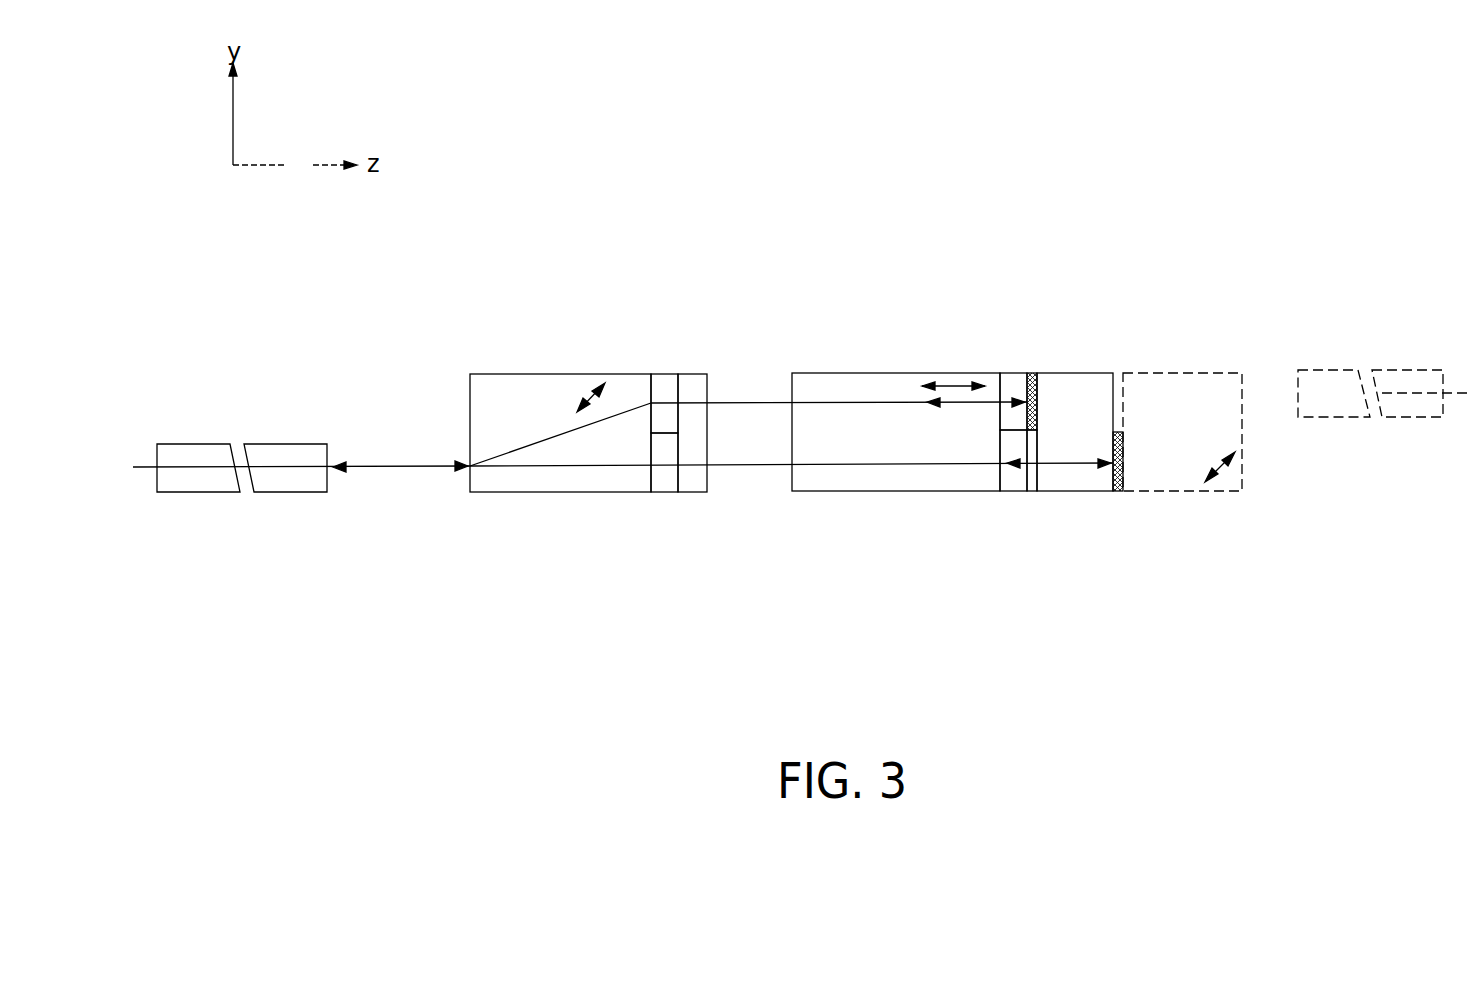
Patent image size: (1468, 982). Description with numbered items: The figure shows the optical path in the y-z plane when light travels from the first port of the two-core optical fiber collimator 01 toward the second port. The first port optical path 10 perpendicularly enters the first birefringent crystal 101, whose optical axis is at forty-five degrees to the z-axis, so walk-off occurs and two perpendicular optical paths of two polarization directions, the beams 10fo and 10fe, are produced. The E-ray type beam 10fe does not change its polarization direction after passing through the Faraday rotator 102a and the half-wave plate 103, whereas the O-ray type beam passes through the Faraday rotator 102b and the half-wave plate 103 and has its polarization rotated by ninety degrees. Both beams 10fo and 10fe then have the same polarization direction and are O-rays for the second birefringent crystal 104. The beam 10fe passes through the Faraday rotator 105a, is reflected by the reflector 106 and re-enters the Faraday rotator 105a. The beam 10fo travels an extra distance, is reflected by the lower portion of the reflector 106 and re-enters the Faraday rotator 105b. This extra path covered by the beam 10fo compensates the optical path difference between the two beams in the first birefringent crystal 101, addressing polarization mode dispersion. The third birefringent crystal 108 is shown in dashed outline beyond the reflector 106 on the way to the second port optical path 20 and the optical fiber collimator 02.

The two-core optical fiber collimator 01 is at (232, 416).
The optical fiber collimator 02 is at (1370, 350).
The first port optical path 10 is at (443, 438).
The second port optical path 20 is at (348, 492).
The first birefringent crystal 101 is at (542, 495).
The Faraday rotator 102a is at (663, 373).
The Faraday rotator 102b is at (663, 493).
The half-wave plate 103 is at (695, 493).
The second birefringent crystal 104 is at (868, 493).
The Faraday rotator 105a is at (1010, 372).
The Faraday rotator 105b is at (1012, 493).
The reflector 106 is at (1082, 493).
The third birefringent crystal 108 is at (1143, 370).
The beam 10fe is at (862, 402).
The beam 10fo is at (958, 465).